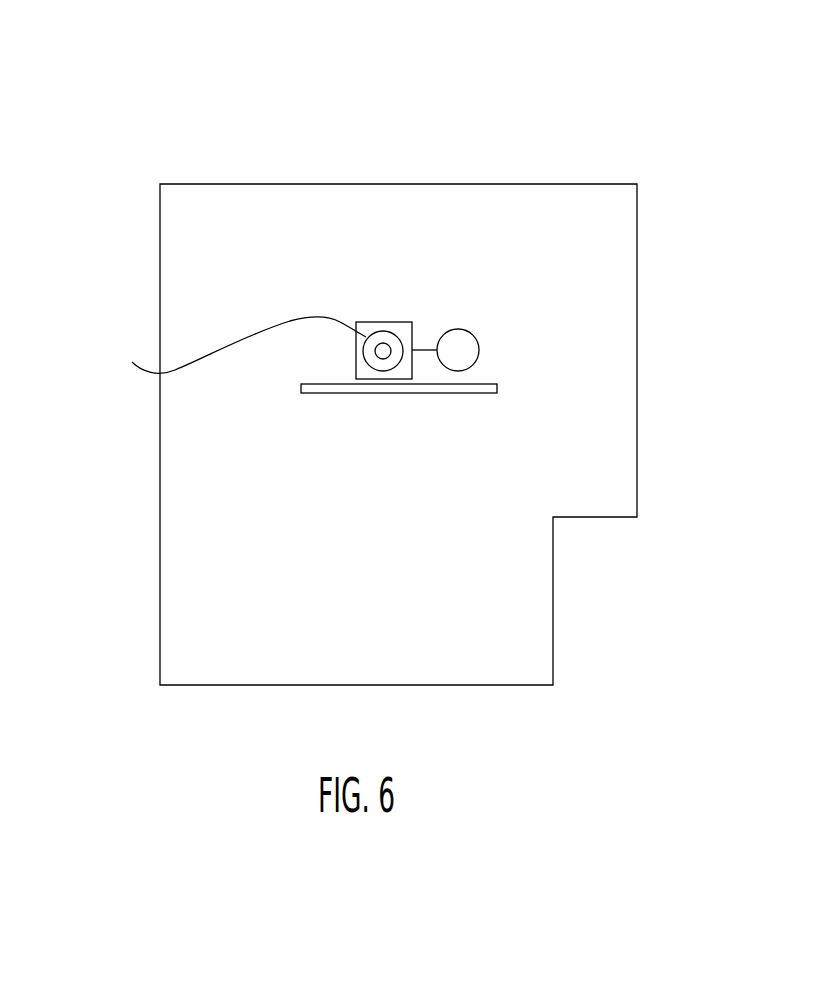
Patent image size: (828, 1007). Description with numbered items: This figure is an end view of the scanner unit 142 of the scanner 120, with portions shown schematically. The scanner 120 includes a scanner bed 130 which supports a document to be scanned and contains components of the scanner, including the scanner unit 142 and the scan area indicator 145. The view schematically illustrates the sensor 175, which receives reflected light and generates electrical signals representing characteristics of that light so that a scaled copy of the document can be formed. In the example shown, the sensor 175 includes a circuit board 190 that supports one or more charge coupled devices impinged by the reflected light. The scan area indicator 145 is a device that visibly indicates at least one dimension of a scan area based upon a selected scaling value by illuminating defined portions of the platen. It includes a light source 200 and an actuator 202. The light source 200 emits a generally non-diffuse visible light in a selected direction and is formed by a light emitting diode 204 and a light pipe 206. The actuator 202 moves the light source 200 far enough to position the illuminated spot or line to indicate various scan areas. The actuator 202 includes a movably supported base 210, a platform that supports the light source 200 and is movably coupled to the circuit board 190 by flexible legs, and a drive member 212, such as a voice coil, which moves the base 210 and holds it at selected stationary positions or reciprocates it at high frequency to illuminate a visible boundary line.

The scanner 120 is at (606, 100).
The scanner bed 130 is at (520, 98).
The scanner unit 142 is at (264, 136).
The circuit board 190 is at (547, 210).
The scan area indicator 145 is at (351, 300).
The light pipe 206 is at (224, 345).
The light source 200 is at (392, 328).
The actuator 202 is at (411, 316).
The light emitting diode 204 is at (383, 343).
The base 210 is at (412, 334).
The drive member 212 is at (472, 332).
The sensor 175 is at (480, 394).